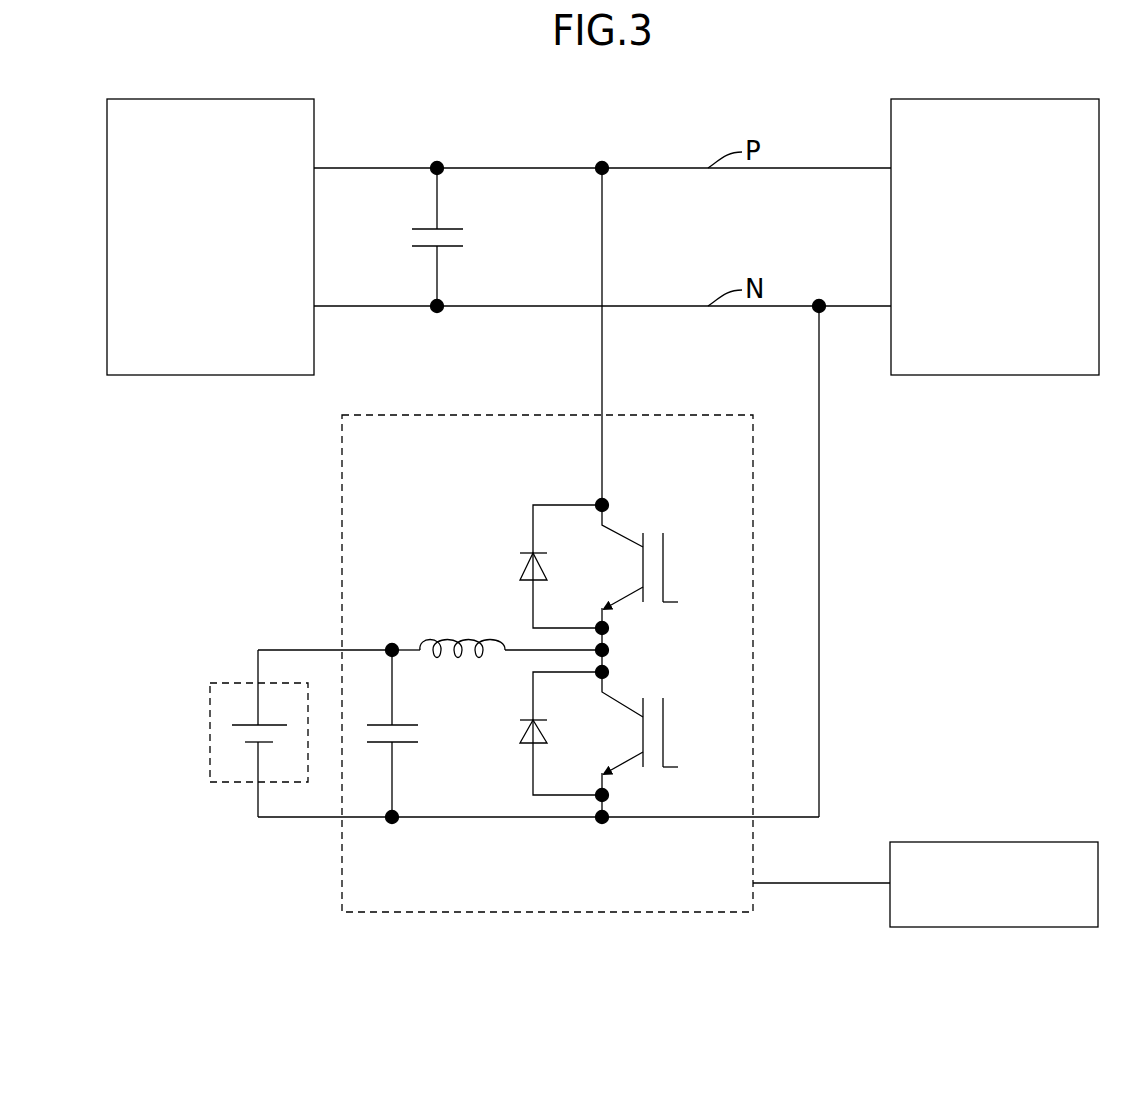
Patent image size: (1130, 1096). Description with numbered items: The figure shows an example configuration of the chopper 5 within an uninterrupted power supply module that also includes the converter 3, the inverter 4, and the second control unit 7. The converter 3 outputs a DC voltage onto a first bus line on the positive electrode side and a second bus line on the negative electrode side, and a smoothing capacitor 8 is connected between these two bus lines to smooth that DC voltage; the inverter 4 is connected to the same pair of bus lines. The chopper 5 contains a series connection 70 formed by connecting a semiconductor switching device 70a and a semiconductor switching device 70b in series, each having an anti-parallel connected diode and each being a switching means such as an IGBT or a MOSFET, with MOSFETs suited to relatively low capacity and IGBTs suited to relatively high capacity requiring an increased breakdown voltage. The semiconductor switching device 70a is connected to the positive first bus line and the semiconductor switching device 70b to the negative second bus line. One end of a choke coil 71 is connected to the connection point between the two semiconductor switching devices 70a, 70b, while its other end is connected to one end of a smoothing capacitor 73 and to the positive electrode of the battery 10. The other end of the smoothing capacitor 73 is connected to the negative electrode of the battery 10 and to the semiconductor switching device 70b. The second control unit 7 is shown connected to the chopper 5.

The converter 3 is at (212, 99).
The inverter 4 is at (996, 99).
The power conversion unit 5 is at (450, 412).
The second control unit 7 is at (995, 842).
The smoothing capacitor 8 is at (452, 229).
The power storage device (battery) 10 is at (226, 682).
The switching element pair 70 is at (630, 624).
The upper switching element 70a is at (624, 535).
The lower switching element 70b is at (624, 705).
The reactor 71 is at (460, 638).
The capacitor 73 is at (420, 732).